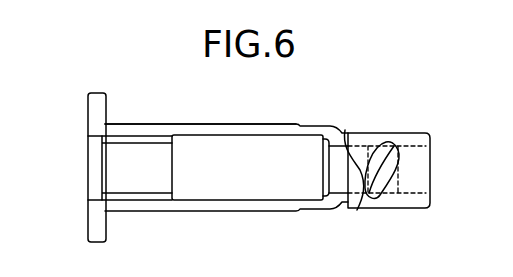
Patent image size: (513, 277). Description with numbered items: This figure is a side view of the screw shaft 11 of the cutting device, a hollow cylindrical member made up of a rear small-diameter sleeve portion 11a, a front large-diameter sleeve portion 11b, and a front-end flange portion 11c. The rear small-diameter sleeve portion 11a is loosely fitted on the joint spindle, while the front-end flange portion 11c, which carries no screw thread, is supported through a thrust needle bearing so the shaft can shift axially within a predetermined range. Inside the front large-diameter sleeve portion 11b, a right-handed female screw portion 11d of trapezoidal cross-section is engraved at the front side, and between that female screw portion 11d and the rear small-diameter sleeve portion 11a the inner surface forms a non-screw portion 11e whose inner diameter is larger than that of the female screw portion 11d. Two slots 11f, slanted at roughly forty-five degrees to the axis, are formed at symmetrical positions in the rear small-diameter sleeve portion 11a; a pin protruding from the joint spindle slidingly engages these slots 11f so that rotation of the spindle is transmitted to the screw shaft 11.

The screw shaft 11 is at (250, 211).
The rear small-diameter sleeve portion 11a is at (413, 134).
The front large-diameter sleeve portion 11b is at (153, 124).
The front-end flange portion 11c is at (96, 226).
The female screw portion 11d is at (142, 195).
The non-screw portion 11e is at (272, 200).
The slots 11f is at (395, 148).